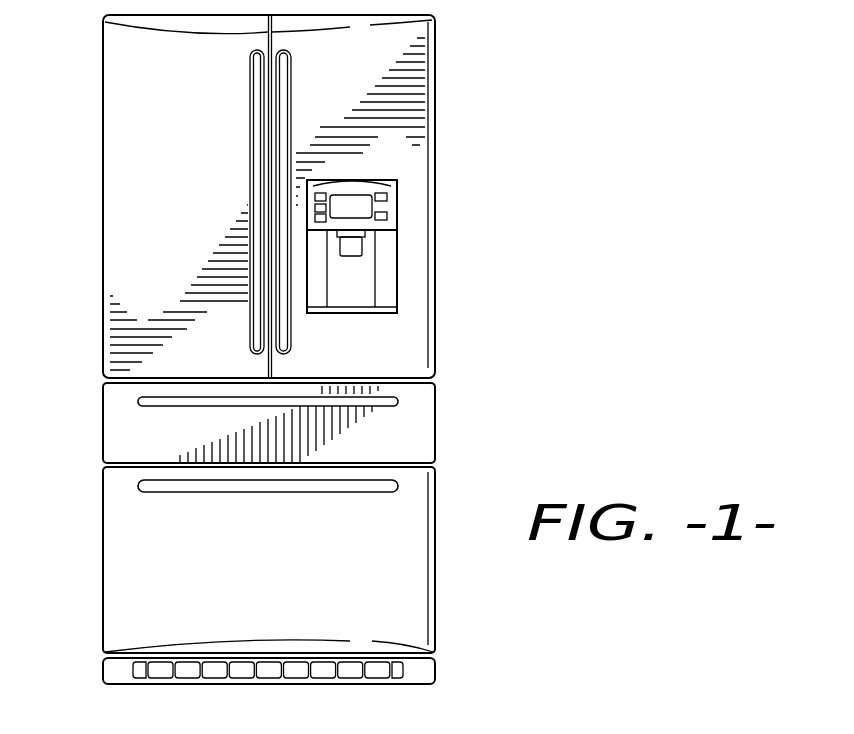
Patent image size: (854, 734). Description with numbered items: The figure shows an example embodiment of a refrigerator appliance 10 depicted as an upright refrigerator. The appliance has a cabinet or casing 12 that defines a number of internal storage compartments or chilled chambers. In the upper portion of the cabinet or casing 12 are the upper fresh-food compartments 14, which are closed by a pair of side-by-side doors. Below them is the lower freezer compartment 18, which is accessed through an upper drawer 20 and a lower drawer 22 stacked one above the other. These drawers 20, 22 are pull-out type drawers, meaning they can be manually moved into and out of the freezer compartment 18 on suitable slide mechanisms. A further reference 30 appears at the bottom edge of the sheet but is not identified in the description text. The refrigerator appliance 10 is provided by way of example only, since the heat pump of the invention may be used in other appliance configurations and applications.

The refrigerator appliance 10 is at (492, 109).
The cabinet or casing 12 is at (436, 288).
The upper fresh-food compartments 14 is at (140, 168).
The lower freezer compartment 18 is at (397, 428).
The upper drawer 20 is at (161, 450).
The lower drawer 22 is at (288, 581).
The base grille 30 is at (326, 696).